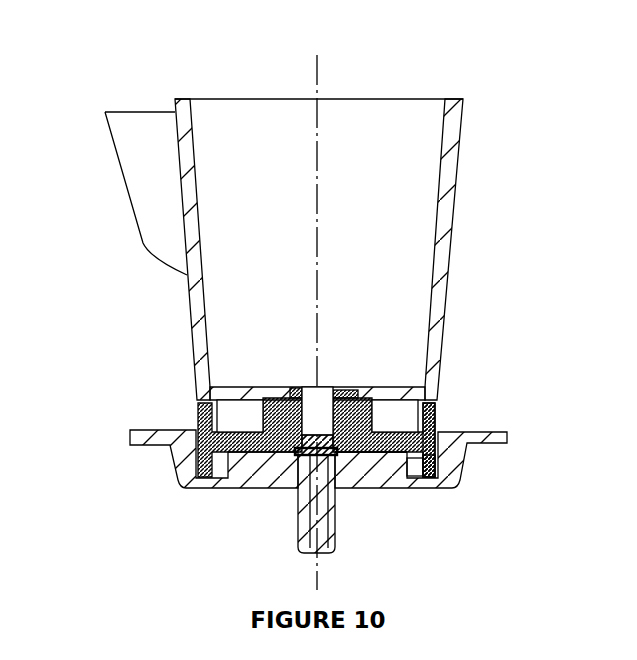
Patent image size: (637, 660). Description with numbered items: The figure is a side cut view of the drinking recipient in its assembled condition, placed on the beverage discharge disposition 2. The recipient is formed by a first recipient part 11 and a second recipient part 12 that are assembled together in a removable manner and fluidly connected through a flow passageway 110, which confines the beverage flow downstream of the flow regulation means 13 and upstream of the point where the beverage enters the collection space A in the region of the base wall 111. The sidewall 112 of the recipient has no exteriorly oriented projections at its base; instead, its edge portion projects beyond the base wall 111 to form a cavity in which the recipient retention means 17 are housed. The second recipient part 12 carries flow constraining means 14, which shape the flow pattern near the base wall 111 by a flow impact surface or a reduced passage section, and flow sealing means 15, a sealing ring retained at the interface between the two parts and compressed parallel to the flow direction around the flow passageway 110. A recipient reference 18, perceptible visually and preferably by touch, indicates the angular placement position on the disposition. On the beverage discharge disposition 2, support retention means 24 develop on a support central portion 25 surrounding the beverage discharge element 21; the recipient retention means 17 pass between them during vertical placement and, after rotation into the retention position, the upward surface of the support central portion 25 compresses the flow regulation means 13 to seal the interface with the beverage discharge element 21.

The collection space A is at (267, 193).
The first recipient part 11 is at (281, 249).
The sidewall 112 is at (472, 249).
The recipient reference 18 is at (127, 193).
The beverage discharge disposition 2 is at (318, 447).
The flow constraining means 14 is at (332, 385).
The flow sealing means 15 is at (358, 391).
The flow passageway 110 is at (310, 411).
The base wall 111 is at (233, 427).
The second recipient part 12 is at (439, 410).
The recipient retention means 17 is at (434, 465).
The support retention means 24 is at (413, 470).
The support central portion 25 is at (389, 454).
The flow regulation means 13 is at (308, 456).
The beverage discharge element 21 is at (293, 494).